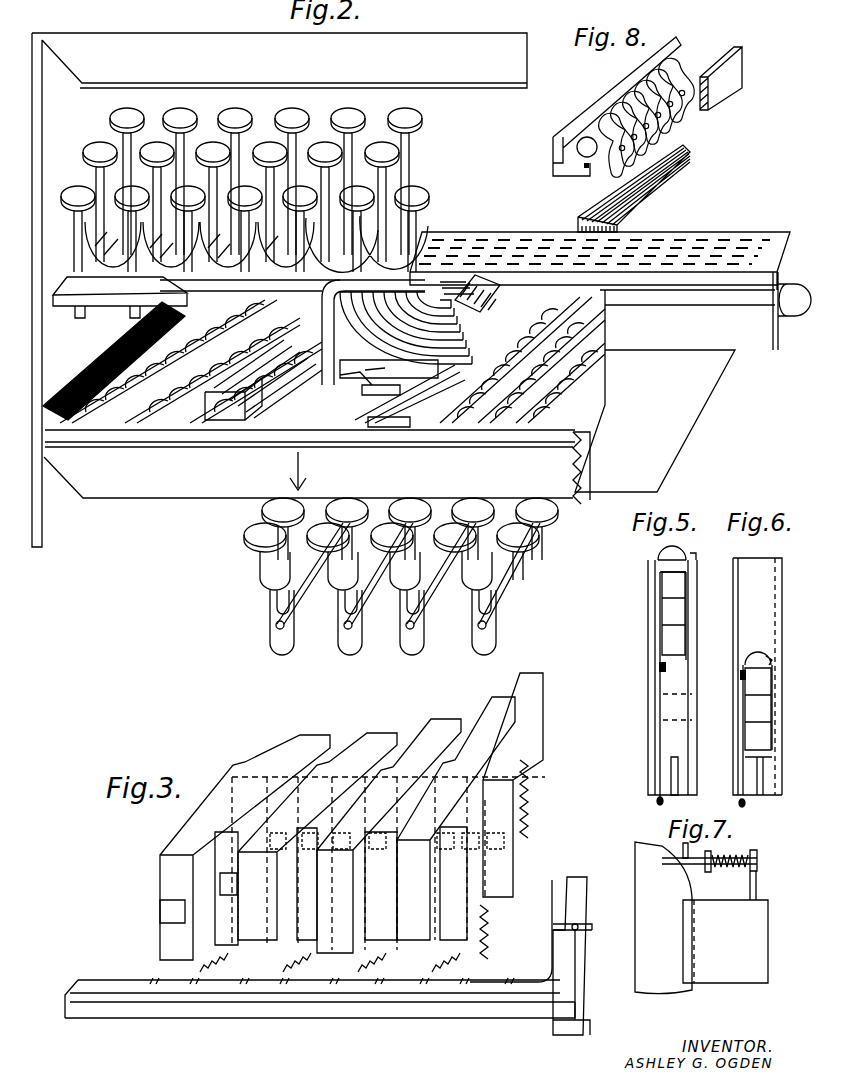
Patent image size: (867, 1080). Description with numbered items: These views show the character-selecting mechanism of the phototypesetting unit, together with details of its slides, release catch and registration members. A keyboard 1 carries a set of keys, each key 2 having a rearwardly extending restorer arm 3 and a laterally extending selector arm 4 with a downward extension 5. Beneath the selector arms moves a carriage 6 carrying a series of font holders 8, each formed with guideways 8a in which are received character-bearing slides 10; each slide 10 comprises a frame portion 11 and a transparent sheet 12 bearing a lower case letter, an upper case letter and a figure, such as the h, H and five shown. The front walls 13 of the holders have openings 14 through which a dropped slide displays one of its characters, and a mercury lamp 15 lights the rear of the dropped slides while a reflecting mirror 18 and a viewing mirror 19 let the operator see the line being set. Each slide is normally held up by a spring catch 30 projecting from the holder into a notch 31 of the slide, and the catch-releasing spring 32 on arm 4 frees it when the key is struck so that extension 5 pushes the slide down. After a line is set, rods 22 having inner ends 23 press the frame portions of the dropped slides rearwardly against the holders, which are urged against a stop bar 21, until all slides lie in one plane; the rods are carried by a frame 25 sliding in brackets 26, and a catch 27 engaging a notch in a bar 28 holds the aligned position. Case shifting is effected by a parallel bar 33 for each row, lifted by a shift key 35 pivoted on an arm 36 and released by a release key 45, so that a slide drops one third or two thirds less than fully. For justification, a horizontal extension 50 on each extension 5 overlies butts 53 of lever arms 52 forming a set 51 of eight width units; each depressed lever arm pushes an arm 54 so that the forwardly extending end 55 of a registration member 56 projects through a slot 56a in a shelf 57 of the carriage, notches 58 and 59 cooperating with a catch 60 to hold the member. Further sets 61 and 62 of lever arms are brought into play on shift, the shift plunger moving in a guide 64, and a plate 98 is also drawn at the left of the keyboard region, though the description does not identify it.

In FIG. 2, the keyboard 1 is at (435, 151).
In FIG. 2, the key 2 is at (112, 116).
In FIG. 2, the restorer arm 3 is at (88, 230).
In FIG. 2, the selector arm 4 is at (205, 290).
In FIG. 2, the downward extension 5 is at (430, 262).
In FIG. 2, the carriage 6 is at (713, 410).
In FIG. 2, the font holder 8 is at (462, 430).
In FIG. 3, the font holder 8 is at (297, 745).
In FIG. 5, the guideway 8a is at (693, 585).
In FIG. 7, the guideway 8a is at (766, 946).
In FIG. 2, the slide 10 is at (150, 392).
In FIG. 5, the slide 10 is at (652, 555).
In FIG. 6, the slide 10 is at (775, 673).
In FIG. 7, the slide 10 is at (640, 917).
In FIG. 3, the slide 10 is at (503, 952).
In FIG. 5, the frame portion 11 is at (660, 615).
In FIG. 6, the frame portion 11 is at (743, 708).
In FIG. 5, the transparent sheet 12 is at (688, 588).
In FIG. 6, the transparent sheet 12 is at (768, 708).
In FIG. 3, the front wall 13 is at (160, 864).
In FIG. 3, the opening 14 is at (220, 882).
In FIG. 2, the mercury lamp 15 is at (797, 290).
In FIG. 2, the reflecting mirror 18 is at (100, 485).
In FIG. 2, the viewing mirror 19 is at (134, 37).
In FIG. 3, the stop bar 21 is at (412, 992).
In FIG. 2, the rod 22 is at (343, 624).
In FIG. 5, the rod 22 is at (656, 738).
In FIG. 6, the rod 22 is at (740, 770).
In FIG. 3, the rod 22 is at (302, 985).
In FIG. 5, the inner end 23 is at (658, 668).
In FIG. 6, the inner end 23 is at (740, 673).
In FIG. 3, the inner end 23 is at (165, 910).
In FIG. 3, the frame 25 is at (506, 1010).
In FIG. 3, the bracket 26 is at (585, 1008).
In FIG. 3, the catch 27 is at (583, 900).
In FIG. 3, the bar 28 is at (580, 930).
In FIG. 2, the spring catch 30 is at (372, 415).
In FIG. 7, the spring catch 30 is at (735, 855).
In FIG. 7, the notch 31 is at (668, 850).
In FIG. 2, the catch-releasing spring 32 is at (366, 375).
In FIG. 5, the parallel bar 33 is at (671, 768).
In FIG. 6, the parallel bar 33 is at (762, 759).
In FIG. 2, the shift key 35 is at (262, 514).
In FIG. 2, the arm 36 is at (398, 590).
In FIG. 2, the release key 45 is at (258, 548).
In FIG. 2, the horizontal extension 50 is at (470, 336).
In FIG. 2, the set of lever arms 51 is at (392, 427).
In FIG. 2, the lever arm 52 is at (476, 262).
In FIG. 2, the butt 53 is at (128, 330).
In FIG. 8, the arm 54 is at (662, 187).
In FIG. 8, the forwardly extending end 55 is at (640, 104).
In FIG. 8, the registration member 56 is at (695, 119).
In FIG. 2, the slot 56a is at (775, 245).
In FIG. 2, the shelf 57 is at (690, 232).
In FIG. 8, the notch 58 is at (592, 170).
In FIG. 8, the notch 59 is at (588, 168).
In FIG. 8, the catch 60 is at (592, 150).
In FIG. 2, the set of lever arms 61 is at (74, 363).
In FIG. 2, the set of lever arms 62 is at (220, 404).
In FIG. 2, the guide 64 is at (306, 636).
In FIG. 2, the plate 98 is at (66, 290).